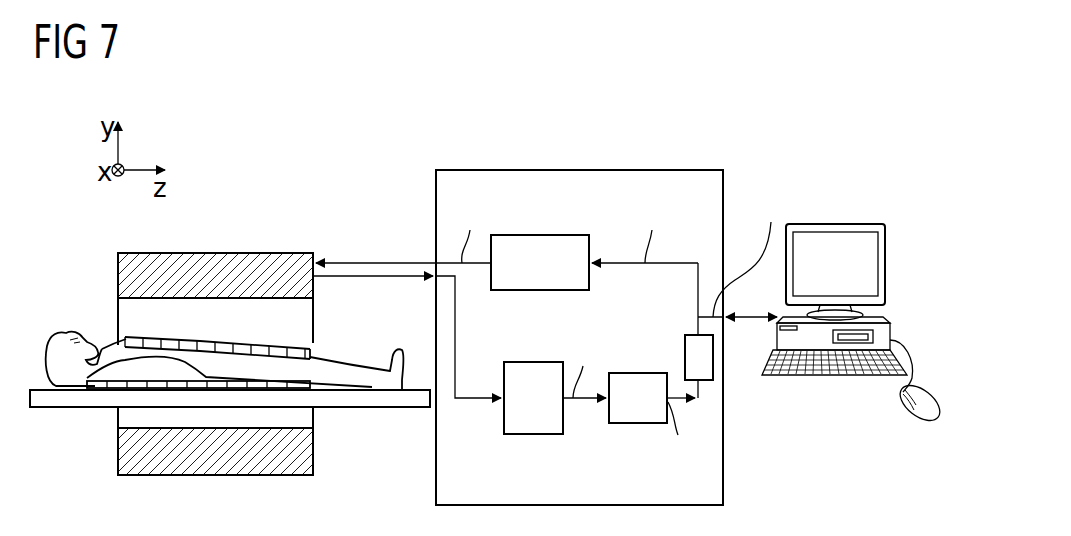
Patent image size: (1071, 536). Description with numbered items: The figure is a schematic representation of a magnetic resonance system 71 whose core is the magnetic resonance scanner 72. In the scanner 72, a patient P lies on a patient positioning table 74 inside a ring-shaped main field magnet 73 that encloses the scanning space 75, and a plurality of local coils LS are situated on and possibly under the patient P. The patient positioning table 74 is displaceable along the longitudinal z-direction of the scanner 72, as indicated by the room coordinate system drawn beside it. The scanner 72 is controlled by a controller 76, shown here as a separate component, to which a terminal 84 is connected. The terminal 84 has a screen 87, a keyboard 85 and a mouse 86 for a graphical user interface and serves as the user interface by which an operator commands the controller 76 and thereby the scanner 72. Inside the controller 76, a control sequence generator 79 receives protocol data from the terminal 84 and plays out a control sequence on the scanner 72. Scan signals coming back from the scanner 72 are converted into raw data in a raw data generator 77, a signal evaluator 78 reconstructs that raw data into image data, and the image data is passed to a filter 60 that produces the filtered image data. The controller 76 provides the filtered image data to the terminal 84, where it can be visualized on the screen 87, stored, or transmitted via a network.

The magnetic resonance system 71 is at (402, 184).
The magnetic resonance scanner 72 is at (268, 228).
The main field magnet 73 is at (160, 263).
The patient positioning table 74 is at (362, 409).
The scanning space 75 is at (226, 302).
The controller 76 is at (582, 170).
The raw data generator 77 is at (533, 434).
The signal evaluator 78 is at (638, 423).
The control sequence generator 79 is at (542, 235).
The filter 60 is at (685, 357).
The terminal 84 is at (838, 210).
The keyboard 85 is at (835, 376).
The mouse 86 is at (910, 415).
The screen 87 is at (886, 265).
The patient P is at (57, 333).
The local coils LS is at (140, 340).